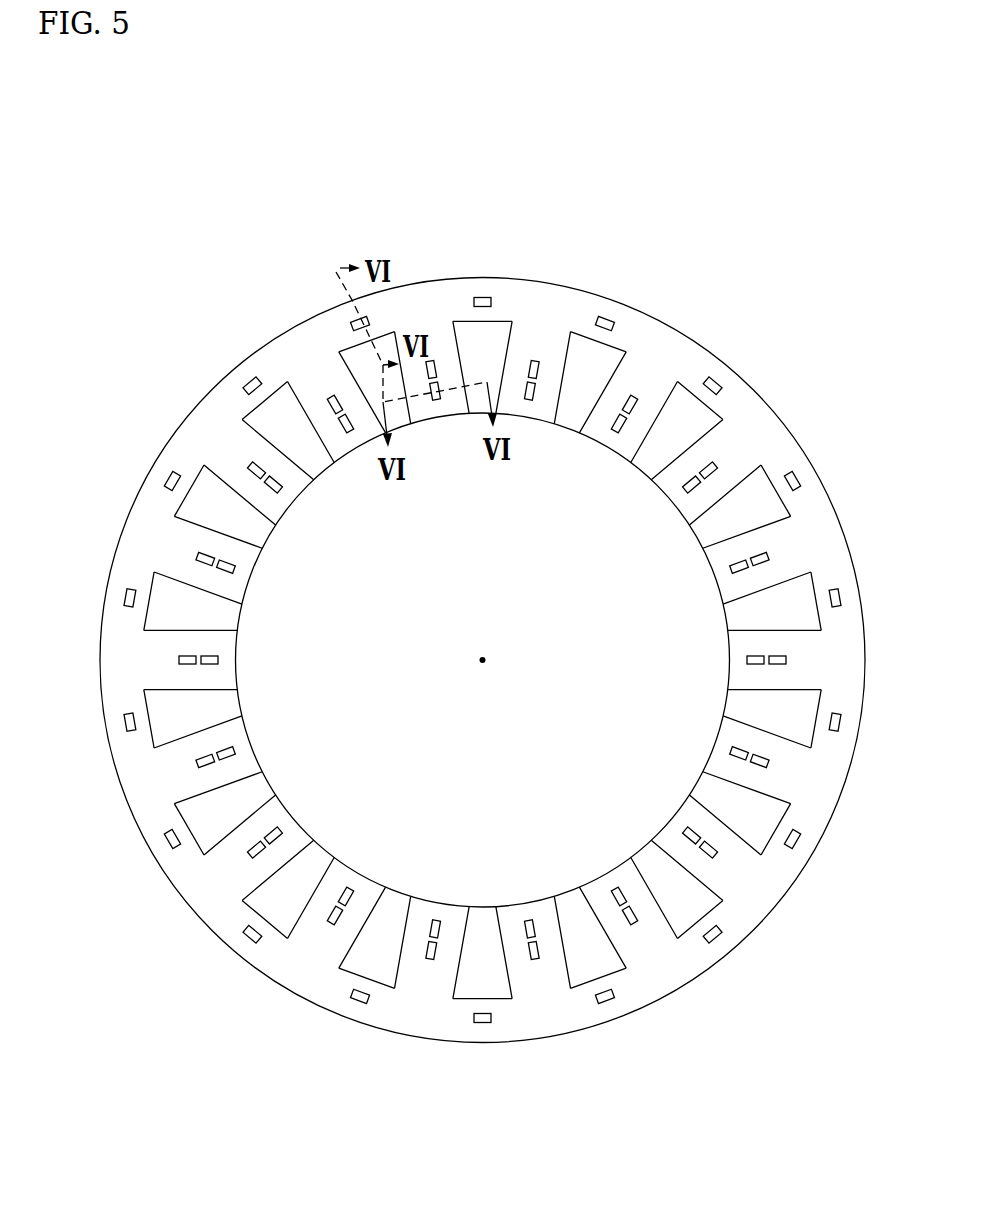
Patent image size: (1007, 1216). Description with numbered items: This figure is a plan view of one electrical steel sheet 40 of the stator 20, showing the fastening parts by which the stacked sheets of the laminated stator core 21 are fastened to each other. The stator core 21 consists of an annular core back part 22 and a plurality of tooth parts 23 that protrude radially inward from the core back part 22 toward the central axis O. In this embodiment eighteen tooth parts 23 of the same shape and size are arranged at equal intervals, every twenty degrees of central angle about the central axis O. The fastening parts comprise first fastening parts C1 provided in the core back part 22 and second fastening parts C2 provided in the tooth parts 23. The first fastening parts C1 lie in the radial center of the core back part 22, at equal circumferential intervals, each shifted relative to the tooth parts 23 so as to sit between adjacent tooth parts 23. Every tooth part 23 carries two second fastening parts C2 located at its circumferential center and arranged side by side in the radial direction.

The stator 20 is at (812, 121).
The stator core 21 is at (707, 207).
The core back part 22 is at (672, 349).
The tooth parts 23 is at (626, 379).
The electrical steel sheet 40 is at (274, 358).
The first fastening part C1 is at (481, 297).
The second fastening part C2 is at (757, 567).
The central axis O is at (487, 659).